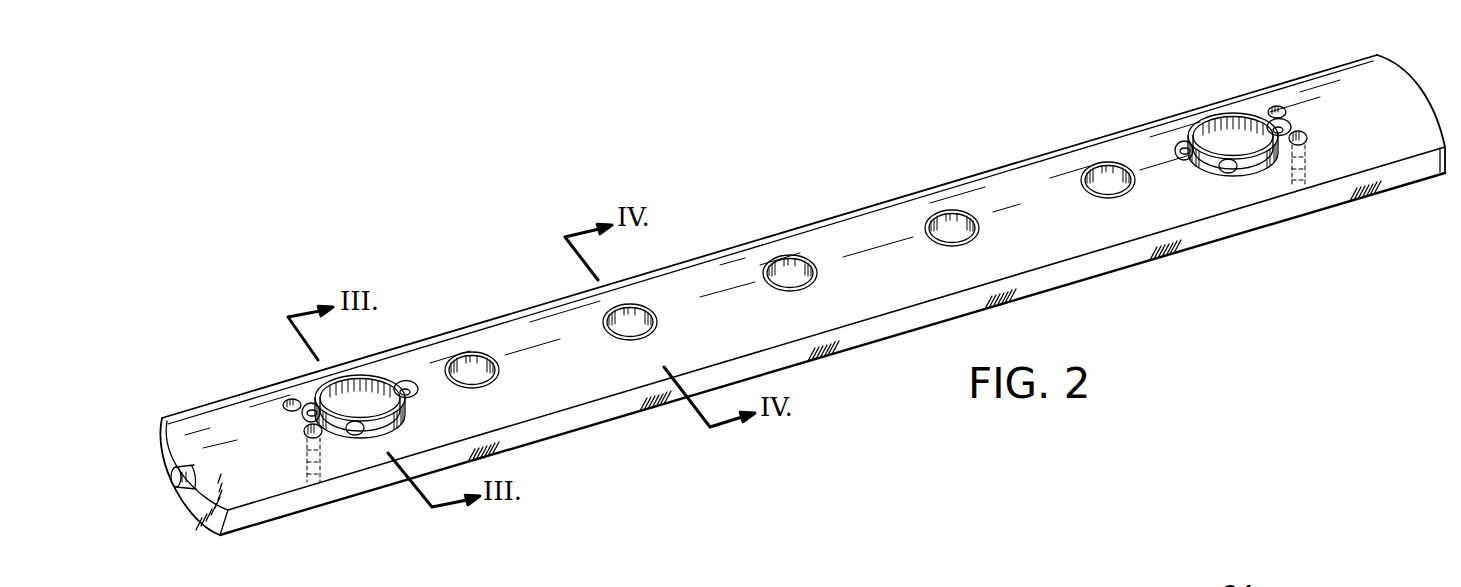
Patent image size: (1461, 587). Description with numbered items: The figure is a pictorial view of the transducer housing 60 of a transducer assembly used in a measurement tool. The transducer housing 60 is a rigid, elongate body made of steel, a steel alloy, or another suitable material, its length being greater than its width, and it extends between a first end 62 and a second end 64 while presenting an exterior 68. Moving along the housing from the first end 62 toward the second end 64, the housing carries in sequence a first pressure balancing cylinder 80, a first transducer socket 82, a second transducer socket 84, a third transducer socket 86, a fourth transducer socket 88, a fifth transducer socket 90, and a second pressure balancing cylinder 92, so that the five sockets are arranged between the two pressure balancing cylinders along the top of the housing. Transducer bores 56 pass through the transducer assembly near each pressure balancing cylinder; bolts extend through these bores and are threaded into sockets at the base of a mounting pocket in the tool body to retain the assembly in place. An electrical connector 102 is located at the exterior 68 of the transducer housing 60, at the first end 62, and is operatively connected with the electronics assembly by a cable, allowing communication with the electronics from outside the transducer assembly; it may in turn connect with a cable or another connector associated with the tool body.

The transducer bore 56 is at (300, 400).
The transducer housing 60 is at (873, 232).
The first end 62 is at (154, 421).
The second end 64 is at (1441, 182).
The exterior 68 is at (812, 216).
The first pressure balancing cylinder 80 is at (358, 392).
The first transducer socket 82 is at (472, 360).
The second transducer socket 84 is at (632, 316).
The third transducer socket 86 is at (790, 265).
The fourth transducer socket 88 is at (953, 220).
The fifth transducer socket 90 is at (1115, 173).
The second pressure balancing cylinder 92 is at (1228, 128).
The electrical connector 102 is at (172, 490).